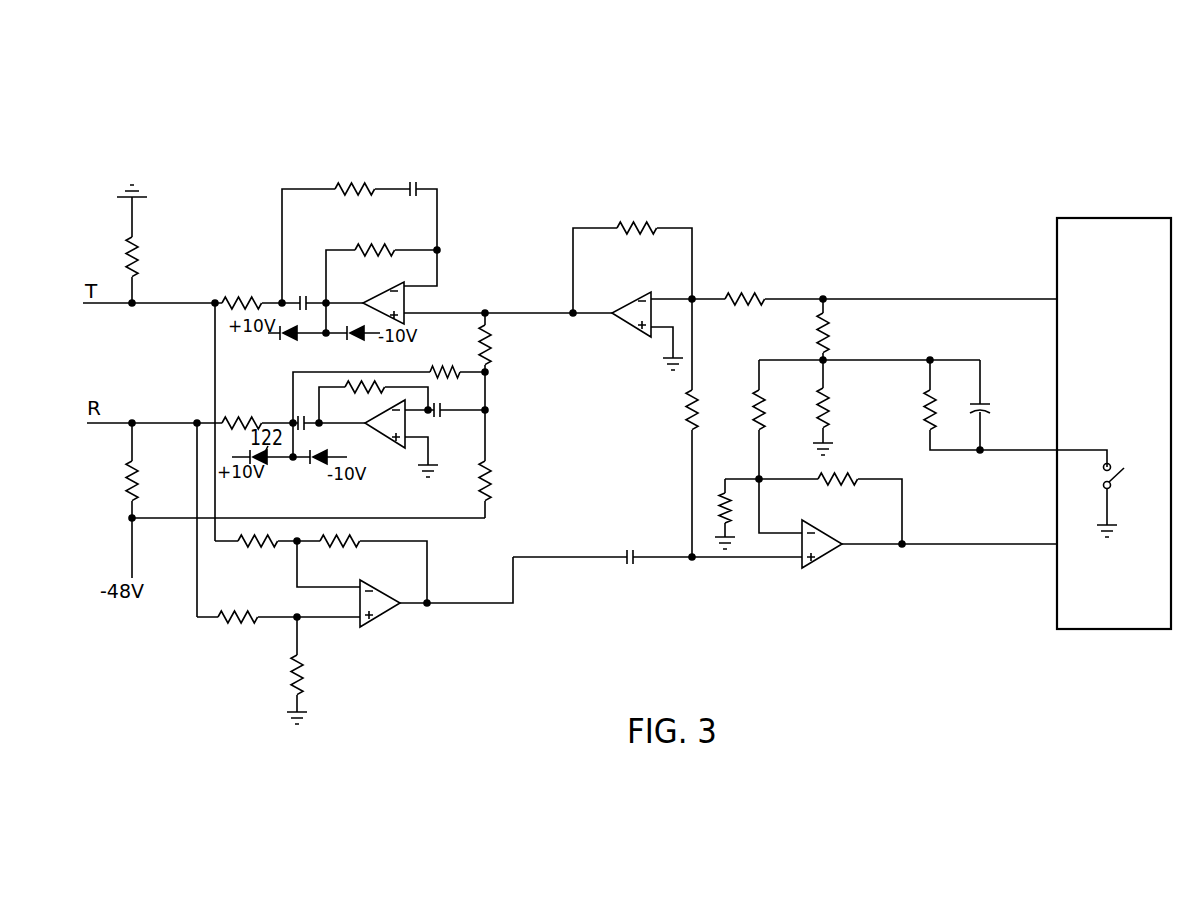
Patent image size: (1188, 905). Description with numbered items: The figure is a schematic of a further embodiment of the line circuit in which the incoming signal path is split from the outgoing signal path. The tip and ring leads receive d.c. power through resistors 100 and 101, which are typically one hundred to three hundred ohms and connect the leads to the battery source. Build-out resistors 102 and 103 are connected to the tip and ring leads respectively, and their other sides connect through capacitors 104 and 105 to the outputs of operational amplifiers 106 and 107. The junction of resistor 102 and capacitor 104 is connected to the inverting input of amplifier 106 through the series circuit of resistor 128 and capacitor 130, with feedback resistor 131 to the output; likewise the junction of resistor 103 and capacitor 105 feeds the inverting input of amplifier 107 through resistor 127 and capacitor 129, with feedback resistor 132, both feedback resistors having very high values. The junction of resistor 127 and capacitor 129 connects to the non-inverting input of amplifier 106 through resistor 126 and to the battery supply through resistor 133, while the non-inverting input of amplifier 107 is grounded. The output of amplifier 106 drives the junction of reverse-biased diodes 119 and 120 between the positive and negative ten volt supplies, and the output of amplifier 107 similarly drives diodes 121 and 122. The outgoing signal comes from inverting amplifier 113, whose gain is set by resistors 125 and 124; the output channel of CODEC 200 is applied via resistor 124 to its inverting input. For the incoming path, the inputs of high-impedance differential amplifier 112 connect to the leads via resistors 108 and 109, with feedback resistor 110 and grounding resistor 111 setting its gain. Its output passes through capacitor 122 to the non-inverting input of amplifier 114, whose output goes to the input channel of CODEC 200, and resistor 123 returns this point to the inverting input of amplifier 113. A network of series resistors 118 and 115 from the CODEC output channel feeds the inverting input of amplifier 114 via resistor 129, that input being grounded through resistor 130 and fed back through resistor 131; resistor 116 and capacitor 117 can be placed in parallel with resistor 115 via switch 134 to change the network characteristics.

The resistor 100 is at (137, 262).
The resistor 101 is at (134, 487).
The build-out resistor 102 is at (243, 298).
The build-out resistor 103 is at (254, 418).
The capacitor 104 is at (312, 286).
The capacitor 105 is at (296, 415).
The operational amplifier 106 is at (386, 290).
The operational amplifier 107 is at (406, 444).
The resistor 108 is at (266, 549).
The resistor 109 is at (246, 627).
The resistor 110 is at (345, 549).
The resistor 111 is at (292, 678).
The differential amplifier 112 is at (376, 620).
The operational amplifier 113 is at (628, 335).
The operational amplifier 114 is at (822, 566).
The resistor 115 is at (829, 412).
The resistor 116 is at (929, 420).
The capacitor 117 is at (988, 407).
The resistor 118 is at (829, 338).
The diode 119 is at (356, 338).
The diode 120 is at (292, 338).
The diode 121 is at (313, 463).
The capacitor 122 is at (627, 565).
The resistor 123 is at (690, 412).
The resistor 124 is at (752, 293).
The resistor 125 is at (638, 226).
The resistor 126 is at (488, 348).
The resistor 127 is at (458, 367).
The resistor 128 is at (345, 186).
The capacitor 129 is at (445, 418).
The capacitor 130 is at (418, 185).
The resistor 131 is at (370, 244).
The resistor 132 is at (375, 391).
The resistor 133 is at (490, 486).
The switch 134 is at (1110, 490).
The CODEC 200 is at (1078, 218).